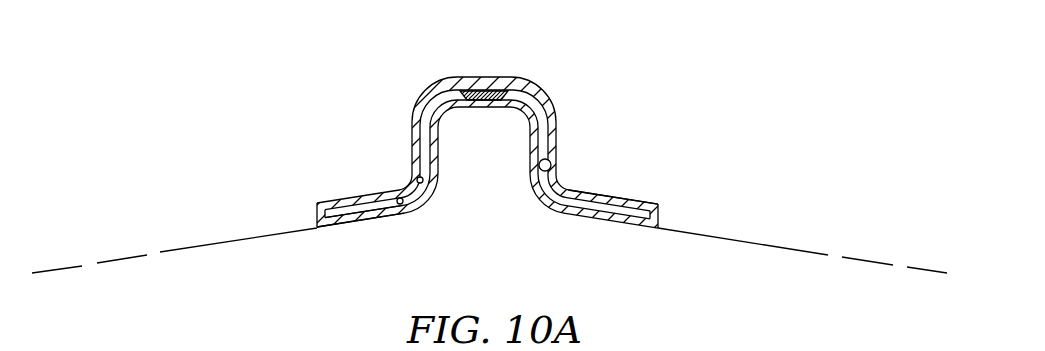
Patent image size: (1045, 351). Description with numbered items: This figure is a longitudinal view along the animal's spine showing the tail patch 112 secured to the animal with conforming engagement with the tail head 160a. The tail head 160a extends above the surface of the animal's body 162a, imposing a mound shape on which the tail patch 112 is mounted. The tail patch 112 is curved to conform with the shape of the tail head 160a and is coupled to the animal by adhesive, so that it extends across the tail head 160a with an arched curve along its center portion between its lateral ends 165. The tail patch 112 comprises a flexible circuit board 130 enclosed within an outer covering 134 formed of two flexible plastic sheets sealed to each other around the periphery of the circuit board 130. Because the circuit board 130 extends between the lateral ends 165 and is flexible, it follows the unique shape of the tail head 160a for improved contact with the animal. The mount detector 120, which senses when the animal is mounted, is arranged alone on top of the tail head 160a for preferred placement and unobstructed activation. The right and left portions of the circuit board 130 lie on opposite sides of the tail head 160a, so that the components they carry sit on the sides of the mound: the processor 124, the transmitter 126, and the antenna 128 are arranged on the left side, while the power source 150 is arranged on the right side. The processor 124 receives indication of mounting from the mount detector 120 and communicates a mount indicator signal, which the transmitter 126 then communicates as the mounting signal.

The tail patch 112 is at (473, 157).
The mount detector 120 is at (482, 88).
The processor 124 is at (385, 189).
The transmitter 126 is at (403, 176).
The antenna 128 is at (376, 226).
The circuit board 130 is at (590, 192).
The outer covering 134 is at (556, 102).
The power source 150 is at (556, 162).
The tail head 160a is at (487, 177).
The surface of the animal's body 162a is at (718, 228).
The lateral ends 165 is at (303, 199).